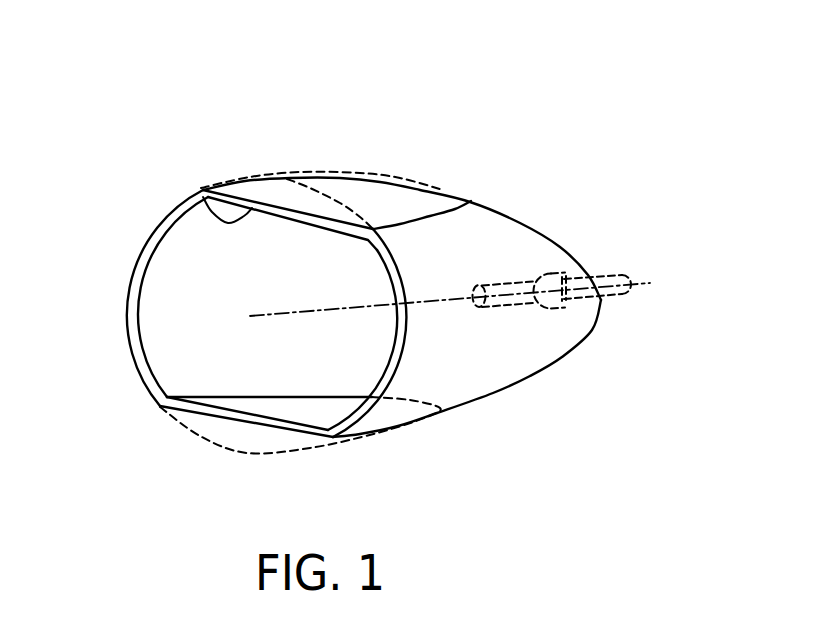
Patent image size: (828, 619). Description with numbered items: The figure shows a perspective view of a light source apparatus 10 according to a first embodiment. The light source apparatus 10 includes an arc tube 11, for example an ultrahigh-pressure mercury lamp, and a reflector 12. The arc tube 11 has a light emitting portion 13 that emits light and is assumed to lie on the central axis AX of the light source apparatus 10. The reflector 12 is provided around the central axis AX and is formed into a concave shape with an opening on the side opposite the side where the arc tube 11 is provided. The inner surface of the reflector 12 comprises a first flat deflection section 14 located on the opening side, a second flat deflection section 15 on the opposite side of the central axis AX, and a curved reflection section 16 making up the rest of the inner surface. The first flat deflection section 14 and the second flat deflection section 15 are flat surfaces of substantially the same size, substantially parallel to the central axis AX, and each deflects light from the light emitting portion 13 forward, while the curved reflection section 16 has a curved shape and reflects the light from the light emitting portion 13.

The light source apparatus 10 is at (240, 86).
The arc tube 11 is at (600, 281).
The reflector 12 is at (466, 200).
The light emitting portion 13 is at (553, 272).
The first flat deflection section 14 is at (202, 208).
The second flat deflection section 15 is at (268, 407).
The curved reflection section 16 is at (158, 303).
The central axis AX is at (648, 281).